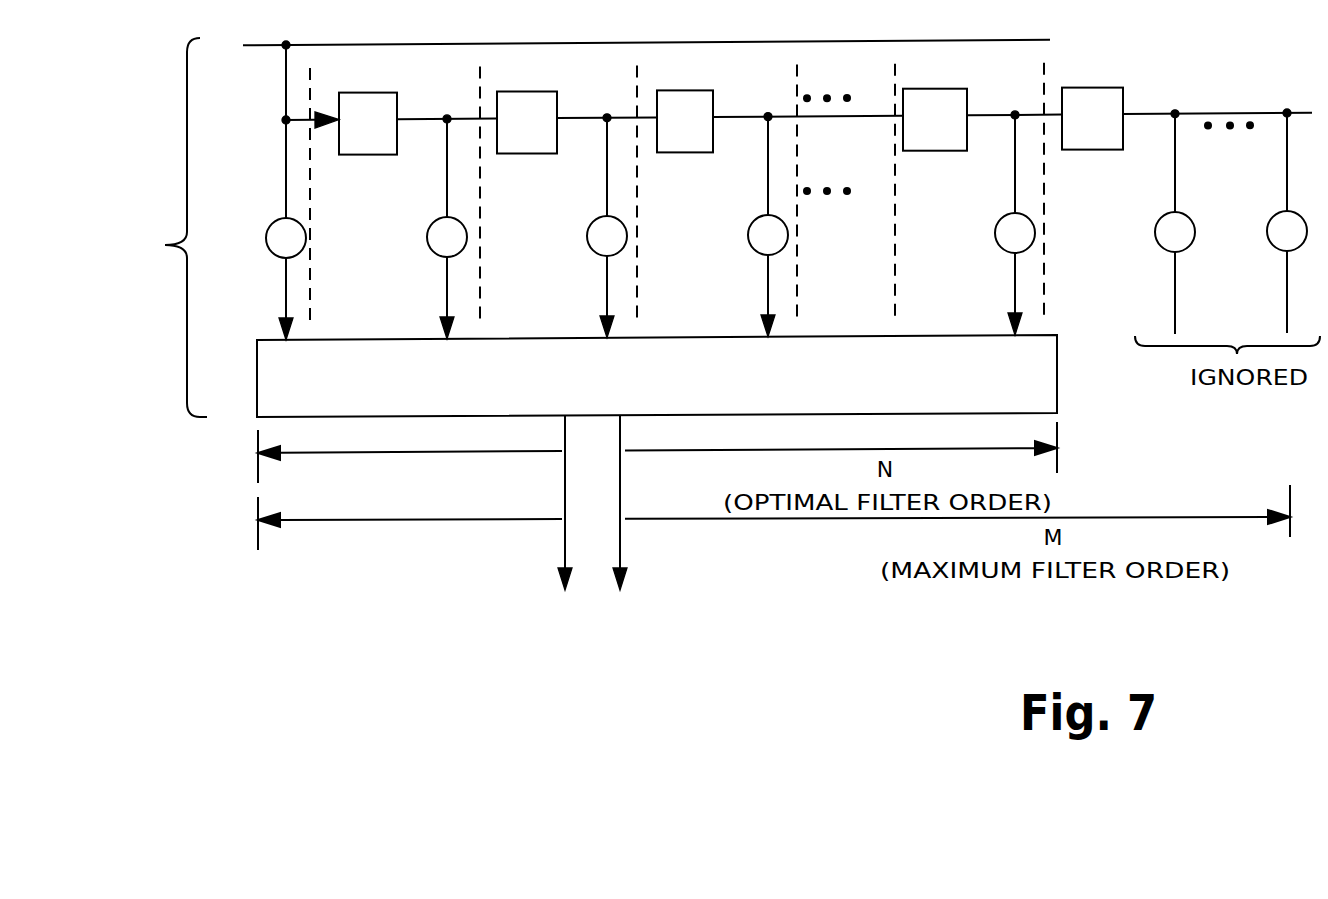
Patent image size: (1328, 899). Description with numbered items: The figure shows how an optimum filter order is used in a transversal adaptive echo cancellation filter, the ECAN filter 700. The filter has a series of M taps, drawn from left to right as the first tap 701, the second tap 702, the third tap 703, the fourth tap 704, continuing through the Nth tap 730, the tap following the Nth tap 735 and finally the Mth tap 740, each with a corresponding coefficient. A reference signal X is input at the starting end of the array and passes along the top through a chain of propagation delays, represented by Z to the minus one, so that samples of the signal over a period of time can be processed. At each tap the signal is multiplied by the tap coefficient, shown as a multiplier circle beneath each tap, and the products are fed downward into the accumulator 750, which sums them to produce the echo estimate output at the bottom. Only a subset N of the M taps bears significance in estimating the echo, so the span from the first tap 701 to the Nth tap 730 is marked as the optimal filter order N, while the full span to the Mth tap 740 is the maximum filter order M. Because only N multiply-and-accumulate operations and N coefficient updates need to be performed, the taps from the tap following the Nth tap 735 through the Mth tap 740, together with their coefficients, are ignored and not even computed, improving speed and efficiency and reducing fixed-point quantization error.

The ECAN filter 700 is at (690, 216).
The tap w1 701 is at (270, 246).
The tap w2 702 is at (432, 227).
The tap w3 703 is at (591, 226).
The tap w4 704 is at (752, 225).
The tap wN 730 is at (999, 223).
The tap wN+1 735 is at (1152, 222).
The tap wM 740 is at (1272, 221).
The accumulator 750 is at (1023, 390).